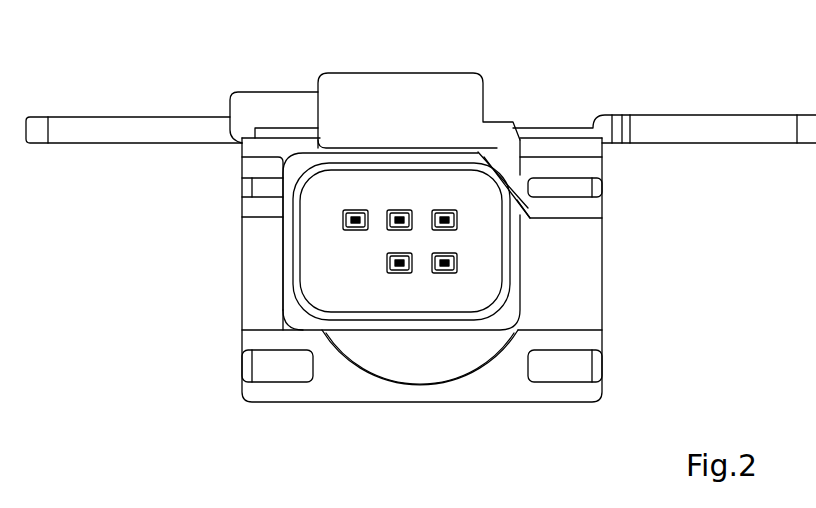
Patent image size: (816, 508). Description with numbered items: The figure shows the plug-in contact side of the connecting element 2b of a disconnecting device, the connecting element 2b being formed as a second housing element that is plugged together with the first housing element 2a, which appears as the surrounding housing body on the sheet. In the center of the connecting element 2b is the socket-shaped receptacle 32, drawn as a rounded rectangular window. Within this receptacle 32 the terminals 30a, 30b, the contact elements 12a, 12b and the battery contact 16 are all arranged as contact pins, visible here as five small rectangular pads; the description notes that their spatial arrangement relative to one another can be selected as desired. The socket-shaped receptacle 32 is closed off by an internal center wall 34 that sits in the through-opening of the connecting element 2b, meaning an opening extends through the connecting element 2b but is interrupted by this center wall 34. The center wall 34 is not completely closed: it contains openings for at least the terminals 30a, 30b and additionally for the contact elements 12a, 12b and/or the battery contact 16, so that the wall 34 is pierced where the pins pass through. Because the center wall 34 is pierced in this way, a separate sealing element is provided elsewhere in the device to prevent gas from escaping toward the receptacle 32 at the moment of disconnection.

The first housing element 2a is at (328, 388).
The connecting element 2b is at (582, 248).
The contact element 12a is at (445, 210).
The contact element 12b is at (399, 210).
The battery contact 16 is at (343, 221).
The terminal 30a is at (398, 273).
The terminal 30b is at (445, 273).
The socket-shaped receptacle 32 is at (334, 265).
The center wall 34 is at (480, 258).